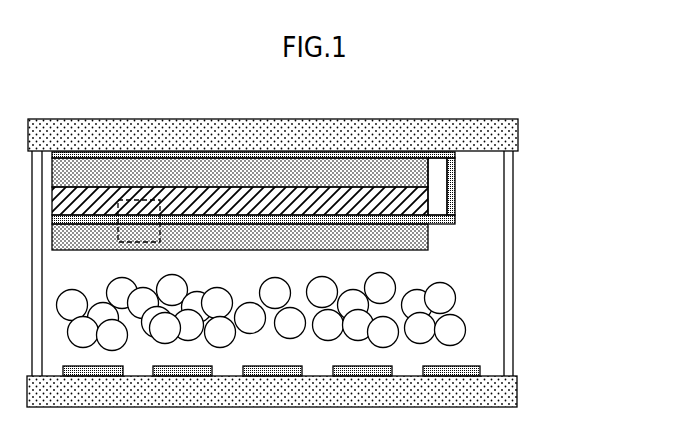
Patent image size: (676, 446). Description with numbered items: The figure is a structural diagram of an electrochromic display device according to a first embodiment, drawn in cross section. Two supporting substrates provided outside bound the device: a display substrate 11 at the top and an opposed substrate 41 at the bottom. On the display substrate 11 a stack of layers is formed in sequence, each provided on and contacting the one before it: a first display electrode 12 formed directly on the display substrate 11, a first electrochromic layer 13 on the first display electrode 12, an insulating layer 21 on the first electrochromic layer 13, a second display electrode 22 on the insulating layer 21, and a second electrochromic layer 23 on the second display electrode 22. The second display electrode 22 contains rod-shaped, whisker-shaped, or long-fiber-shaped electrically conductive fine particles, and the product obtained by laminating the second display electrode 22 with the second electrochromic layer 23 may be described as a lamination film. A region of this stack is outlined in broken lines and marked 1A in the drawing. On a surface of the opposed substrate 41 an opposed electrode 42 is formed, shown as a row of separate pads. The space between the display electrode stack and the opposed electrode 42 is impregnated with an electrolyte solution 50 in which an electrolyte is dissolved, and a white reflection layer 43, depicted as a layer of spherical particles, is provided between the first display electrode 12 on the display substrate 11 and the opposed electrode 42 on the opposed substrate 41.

The display substrate 11 is at (510, 135).
The first display electrode 12 is at (430, 158).
The first electrochromic layer 13 is at (430, 173).
The insulating layer 21 is at (430, 200).
The second display electrode 22 is at (455, 215).
The second electrochromic layer 23 is at (428, 240).
The light emitting element region 1A is at (135, 200).
The electrolyte solution 50 is at (465, 280).
The white reflection layer 43 is at (458, 332).
The opposed electrode 42 is at (468, 368).
The opposed substrate 41 is at (510, 392).